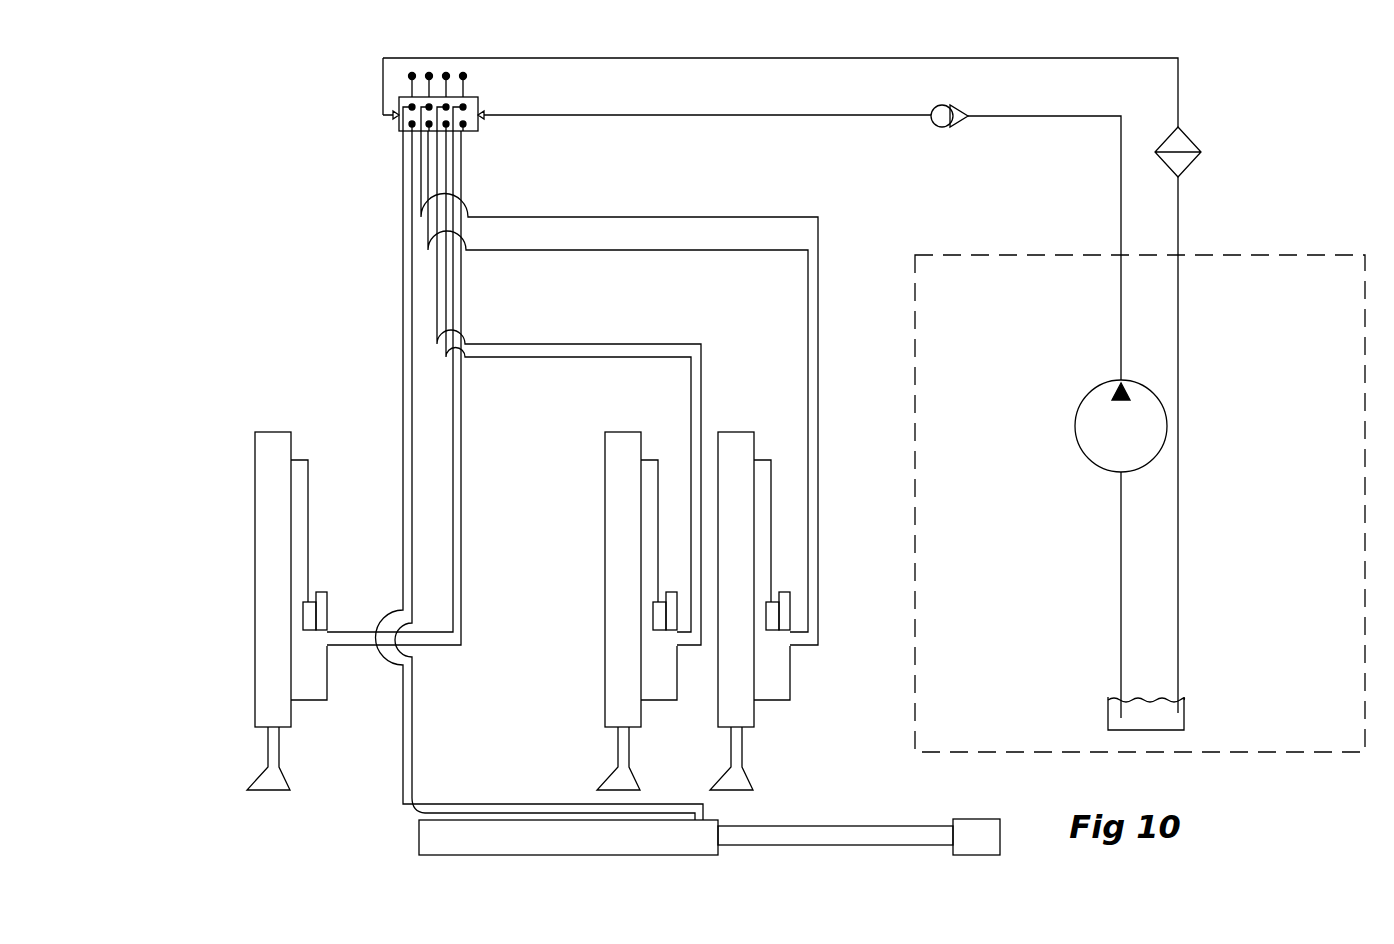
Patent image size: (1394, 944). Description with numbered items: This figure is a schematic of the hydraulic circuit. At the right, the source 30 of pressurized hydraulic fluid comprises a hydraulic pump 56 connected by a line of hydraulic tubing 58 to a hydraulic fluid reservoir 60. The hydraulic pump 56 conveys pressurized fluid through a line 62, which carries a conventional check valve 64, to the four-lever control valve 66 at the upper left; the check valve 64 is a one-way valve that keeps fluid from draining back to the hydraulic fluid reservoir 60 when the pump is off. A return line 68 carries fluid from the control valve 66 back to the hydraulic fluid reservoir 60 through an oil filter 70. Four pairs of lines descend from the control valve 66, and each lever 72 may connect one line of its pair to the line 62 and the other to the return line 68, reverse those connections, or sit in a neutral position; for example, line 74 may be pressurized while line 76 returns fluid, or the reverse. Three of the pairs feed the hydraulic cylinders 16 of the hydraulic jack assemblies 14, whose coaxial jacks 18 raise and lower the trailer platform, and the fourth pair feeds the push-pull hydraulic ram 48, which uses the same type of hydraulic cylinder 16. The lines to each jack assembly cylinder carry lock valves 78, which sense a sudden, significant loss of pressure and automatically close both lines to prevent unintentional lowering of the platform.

The hydraulic jack assembly 14 is at (238, 628).
The hydraulic cylinder 16 is at (252, 538).
The jack 18 is at (268, 758).
The source of pressurized hydraulic fluid 30 is at (1068, 762).
The push-pull hydraulic ram 48 is at (435, 860).
The hydraulic pump 56 is at (1072, 462).
The line of hydraulic tubing 58 is at (1115, 587).
The hydraulic fluid reservoir 60 is at (1103, 706).
The line 62 is at (748, 118).
The check valve 64 is at (930, 106).
The 4-lever control valve 66 is at (487, 82).
The return line 68 is at (380, 78).
The oil filter 70 is at (1205, 140).
The lever 72 is at (447, 75).
The line 74 is at (468, 163).
The line 76 is at (468, 182).
The lock valve 78 is at (328, 606).